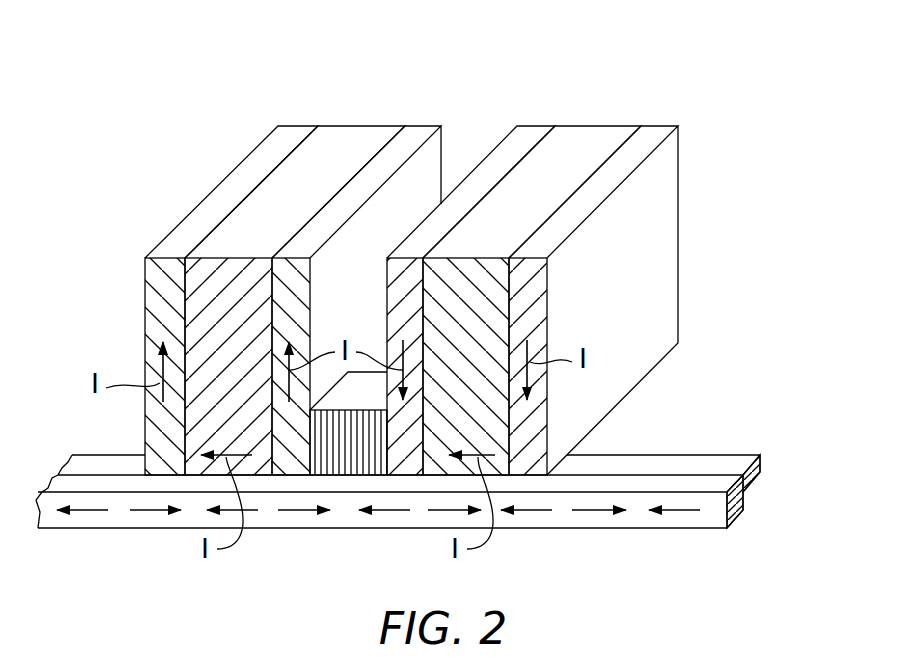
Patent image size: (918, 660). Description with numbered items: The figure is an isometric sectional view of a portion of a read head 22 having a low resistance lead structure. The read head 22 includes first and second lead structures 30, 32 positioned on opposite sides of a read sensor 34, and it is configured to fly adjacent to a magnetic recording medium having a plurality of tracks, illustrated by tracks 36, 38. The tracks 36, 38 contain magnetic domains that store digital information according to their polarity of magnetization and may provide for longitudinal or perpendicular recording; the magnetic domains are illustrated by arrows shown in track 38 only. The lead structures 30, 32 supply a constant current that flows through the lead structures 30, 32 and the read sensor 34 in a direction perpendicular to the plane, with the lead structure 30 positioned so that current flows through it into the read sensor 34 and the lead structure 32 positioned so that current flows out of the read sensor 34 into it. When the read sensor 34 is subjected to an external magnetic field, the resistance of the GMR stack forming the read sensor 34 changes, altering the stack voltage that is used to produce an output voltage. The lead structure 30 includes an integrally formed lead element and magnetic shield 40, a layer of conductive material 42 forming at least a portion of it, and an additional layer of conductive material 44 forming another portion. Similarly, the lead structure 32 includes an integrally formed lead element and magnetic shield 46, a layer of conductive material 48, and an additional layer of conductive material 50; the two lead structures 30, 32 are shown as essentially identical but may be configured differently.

The read head 22 is at (737, 145).
The first lead structure 30 is at (678, 126).
The second lead structure 32 is at (278, 126).
The read sensor 34 is at (348, 452).
The track 36 is at (763, 471).
The track 38 is at (753, 496).
The integrally formed lead element and magnetic shield 40 is at (584, 135).
The layer of conductive material 42 is at (531, 135).
The additional layer of conductive material 44 is at (649, 134).
The integrally formed lead element and magnetic shield 46 is at (355, 136).
The layer of conductive material 48 is at (416, 136).
The additional layer of conductive material 50 is at (270, 143).